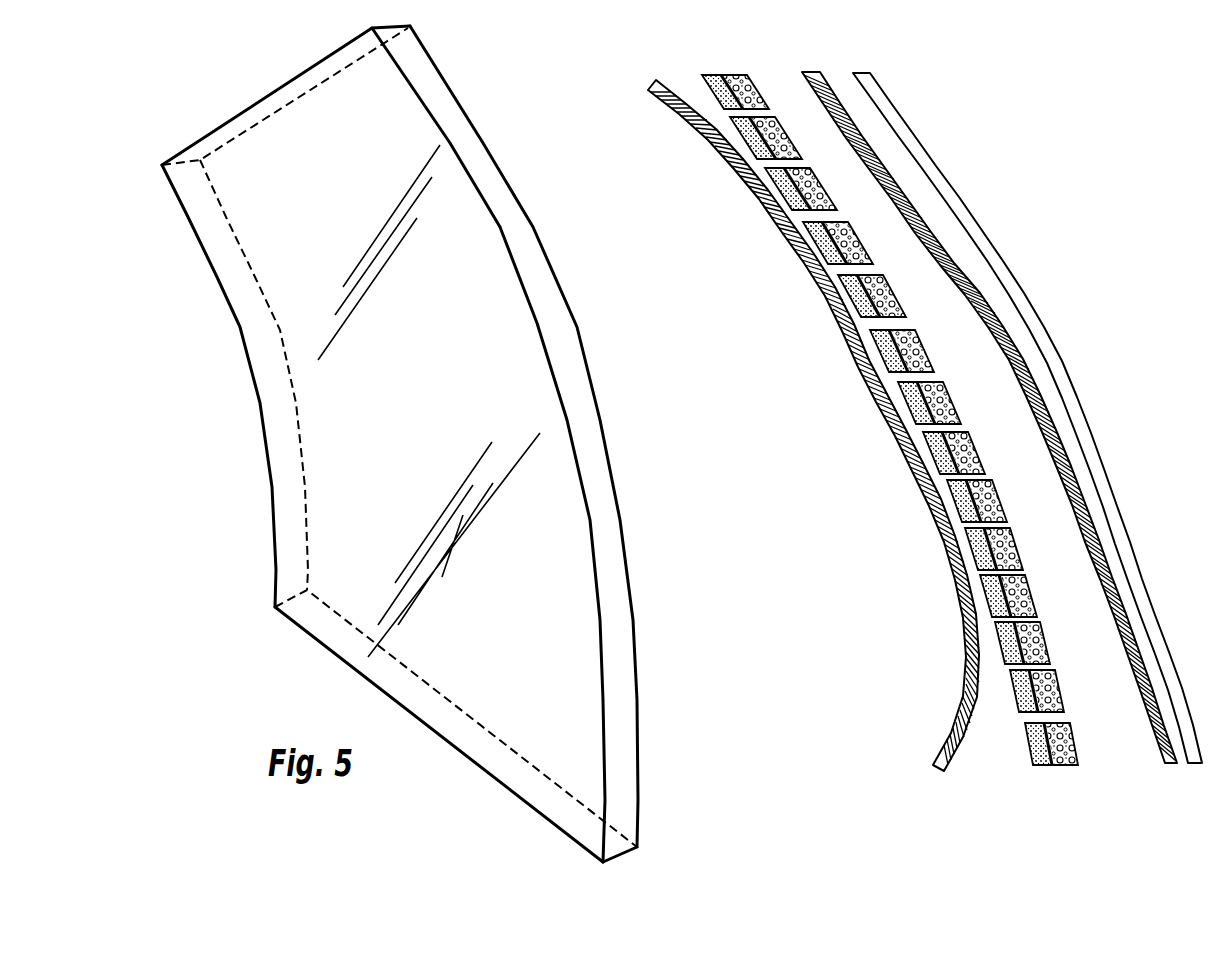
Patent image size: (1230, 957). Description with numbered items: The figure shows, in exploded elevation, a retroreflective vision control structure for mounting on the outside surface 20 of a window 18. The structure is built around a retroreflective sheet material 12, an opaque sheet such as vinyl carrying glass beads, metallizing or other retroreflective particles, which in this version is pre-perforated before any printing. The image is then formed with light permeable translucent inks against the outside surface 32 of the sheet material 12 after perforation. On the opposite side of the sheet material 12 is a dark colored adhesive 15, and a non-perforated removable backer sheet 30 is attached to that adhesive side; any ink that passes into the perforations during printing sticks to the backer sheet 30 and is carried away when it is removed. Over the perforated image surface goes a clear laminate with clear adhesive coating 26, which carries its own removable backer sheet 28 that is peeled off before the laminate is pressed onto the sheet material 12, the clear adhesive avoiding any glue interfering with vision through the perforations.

The retroreflective sheet material 12 is at (886, 422).
The dark colored adhesive 15 is at (1033, 770).
The window 18 is at (627, 862).
The outside surface 20 is at (850, 422).
The clear laminate with clear adhesive coating 26 is at (1108, 473).
The removable backer sheet 28 is at (1168, 767).
The non-perforated removable backer sheet 30 is at (850, 347).
The outside surface of sheet material 32 is at (1002, 447).